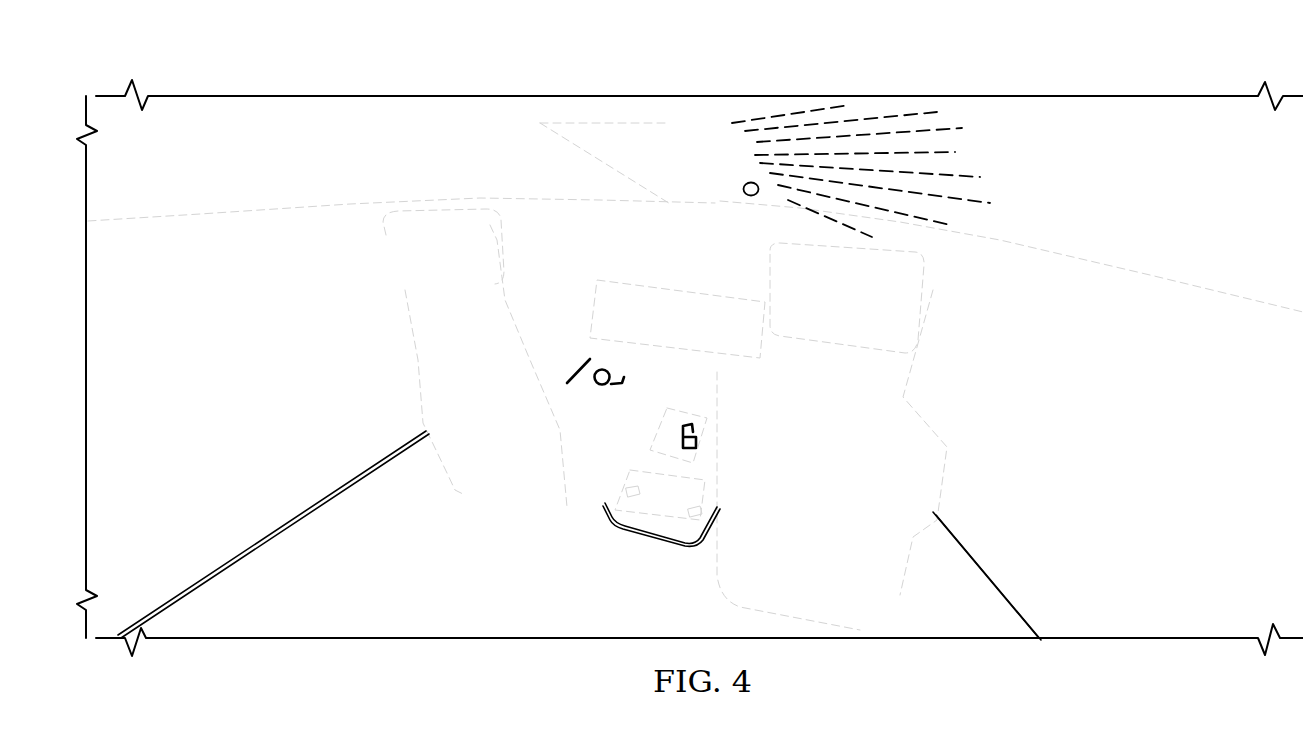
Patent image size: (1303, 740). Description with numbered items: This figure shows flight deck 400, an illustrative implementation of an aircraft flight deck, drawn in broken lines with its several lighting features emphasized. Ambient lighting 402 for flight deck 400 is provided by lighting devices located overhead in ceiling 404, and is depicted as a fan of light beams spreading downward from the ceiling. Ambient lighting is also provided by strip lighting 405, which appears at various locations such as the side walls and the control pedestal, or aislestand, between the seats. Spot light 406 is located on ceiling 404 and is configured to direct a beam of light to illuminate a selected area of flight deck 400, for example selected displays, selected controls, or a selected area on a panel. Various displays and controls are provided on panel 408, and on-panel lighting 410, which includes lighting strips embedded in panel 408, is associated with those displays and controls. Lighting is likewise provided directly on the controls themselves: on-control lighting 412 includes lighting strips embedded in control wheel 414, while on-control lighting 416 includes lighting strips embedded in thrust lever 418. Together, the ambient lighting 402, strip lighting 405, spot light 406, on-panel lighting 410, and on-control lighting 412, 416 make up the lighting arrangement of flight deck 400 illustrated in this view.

The flight deck 400 is at (1124, 74).
The ambient lighting 402 is at (789, 115).
The ceiling 404 is at (612, 133).
The strip lighting 405 is at (214, 579).
The spot light 406 is at (743, 186).
The panel 408 is at (677, 505).
The on-panel lighting 410 is at (638, 497).
The on-control lighting 412 is at (602, 389).
The control wheel 414 is at (643, 363).
The on-control lighting 416 is at (686, 423).
The thrust lever 418 is at (703, 440).